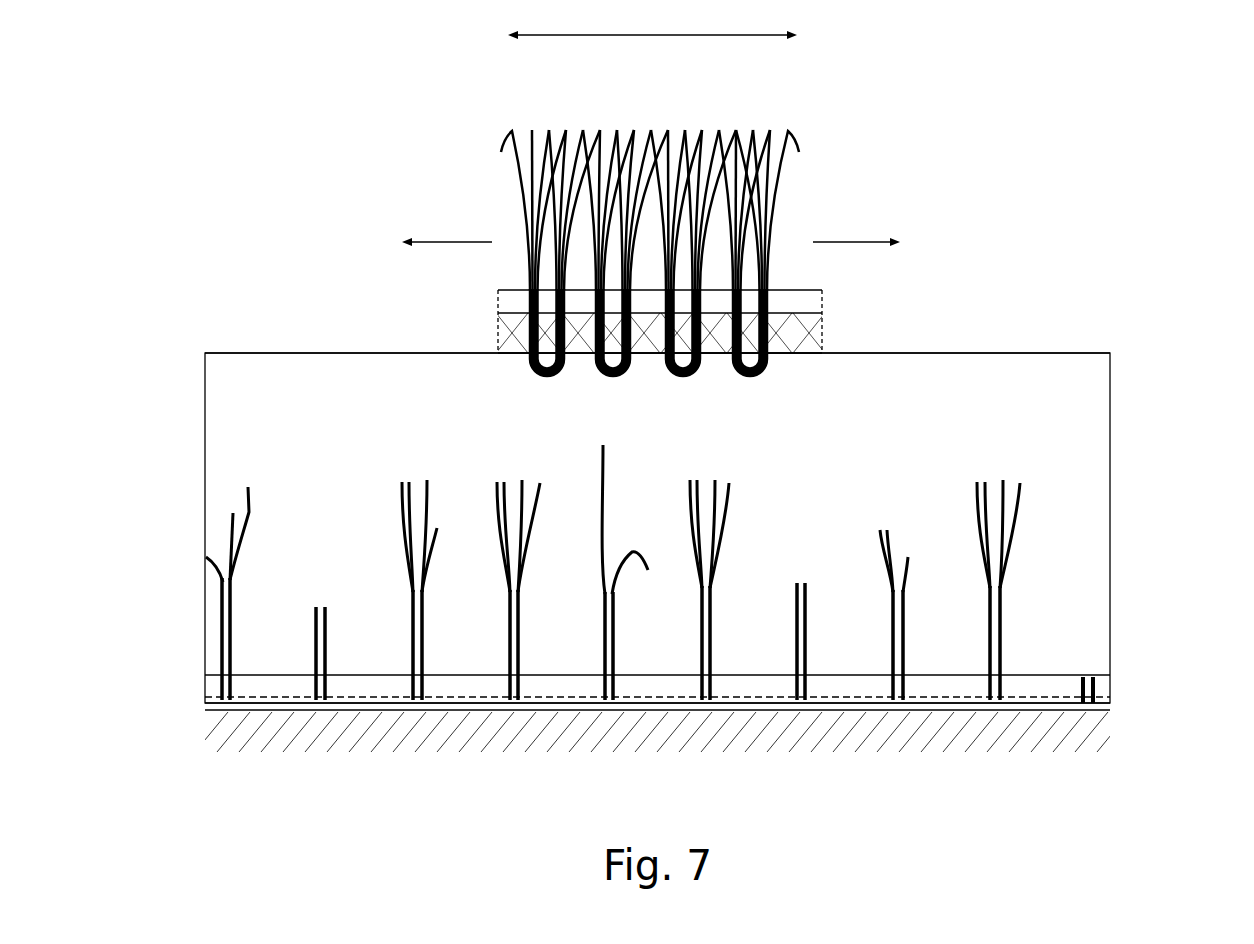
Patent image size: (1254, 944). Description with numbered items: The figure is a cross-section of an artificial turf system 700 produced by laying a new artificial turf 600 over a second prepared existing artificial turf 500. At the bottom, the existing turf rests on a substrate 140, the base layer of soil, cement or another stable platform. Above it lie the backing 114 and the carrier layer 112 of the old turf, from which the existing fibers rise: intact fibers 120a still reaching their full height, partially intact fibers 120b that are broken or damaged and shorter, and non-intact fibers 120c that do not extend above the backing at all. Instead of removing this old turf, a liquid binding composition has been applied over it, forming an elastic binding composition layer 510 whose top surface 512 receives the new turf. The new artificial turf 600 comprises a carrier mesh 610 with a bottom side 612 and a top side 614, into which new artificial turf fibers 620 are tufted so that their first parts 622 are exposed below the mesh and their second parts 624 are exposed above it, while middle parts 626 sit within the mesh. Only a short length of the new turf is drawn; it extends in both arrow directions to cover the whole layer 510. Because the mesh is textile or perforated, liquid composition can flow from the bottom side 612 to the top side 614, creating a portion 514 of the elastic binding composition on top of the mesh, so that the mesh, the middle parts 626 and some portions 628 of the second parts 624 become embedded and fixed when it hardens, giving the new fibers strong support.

The new artificial turf 600 is at (478, 135).
The new artificial turf fibers 620 is at (810, 128).
The second parts of the artificial turf fibers 624 is at (496, 180).
The first parts of the artificial turf fibers 622 is at (520, 361).
The portions of the second parts of the fibers 628 is at (525, 298).
The middle parts of the artificial turf fibers 626 is at (527, 326).
The portion of the elastic binding composition 514 is at (797, 297).
The top side of the carrier mesh 614 is at (800, 313).
The carrier mesh 610 is at (797, 336).
The bottom side of the carrier mesh 612 is at (803, 356).
The second prepared existing artificial turf 500 is at (1144, 376).
The elastic binding composition layer 510 is at (205, 367).
The top surface of the elastic binding composition layer 512 is at (1080, 352).
The carrier layer 112 is at (557, 686).
The backing 114 is at (478, 704).
The substrate 140 is at (1094, 734).
The intact fibers 120a is at (248, 487).
The partially intact fibers 120b is at (222, 500).
The non-intact fibers 120c is at (1090, 675).
The artificial turf system 700 is at (360, 760).